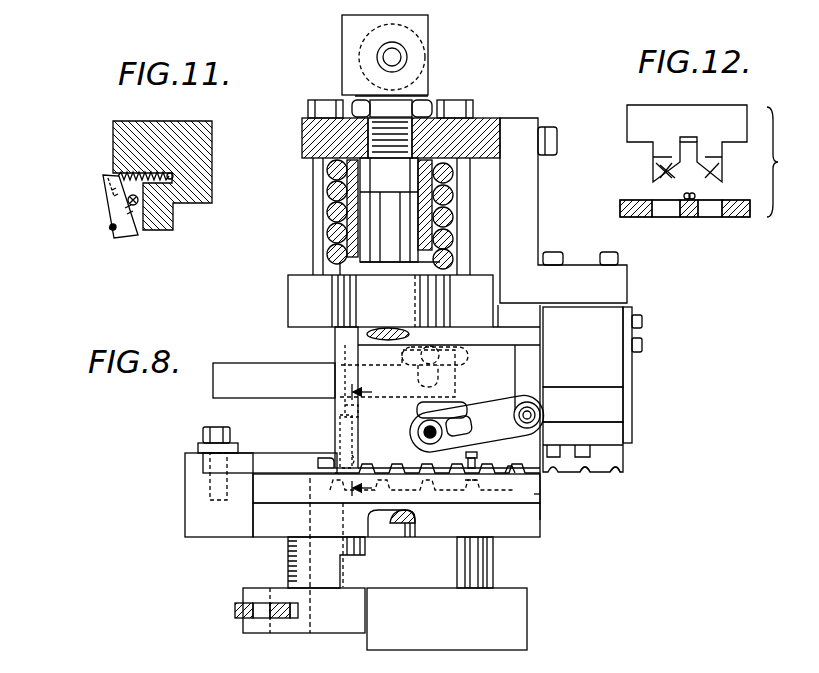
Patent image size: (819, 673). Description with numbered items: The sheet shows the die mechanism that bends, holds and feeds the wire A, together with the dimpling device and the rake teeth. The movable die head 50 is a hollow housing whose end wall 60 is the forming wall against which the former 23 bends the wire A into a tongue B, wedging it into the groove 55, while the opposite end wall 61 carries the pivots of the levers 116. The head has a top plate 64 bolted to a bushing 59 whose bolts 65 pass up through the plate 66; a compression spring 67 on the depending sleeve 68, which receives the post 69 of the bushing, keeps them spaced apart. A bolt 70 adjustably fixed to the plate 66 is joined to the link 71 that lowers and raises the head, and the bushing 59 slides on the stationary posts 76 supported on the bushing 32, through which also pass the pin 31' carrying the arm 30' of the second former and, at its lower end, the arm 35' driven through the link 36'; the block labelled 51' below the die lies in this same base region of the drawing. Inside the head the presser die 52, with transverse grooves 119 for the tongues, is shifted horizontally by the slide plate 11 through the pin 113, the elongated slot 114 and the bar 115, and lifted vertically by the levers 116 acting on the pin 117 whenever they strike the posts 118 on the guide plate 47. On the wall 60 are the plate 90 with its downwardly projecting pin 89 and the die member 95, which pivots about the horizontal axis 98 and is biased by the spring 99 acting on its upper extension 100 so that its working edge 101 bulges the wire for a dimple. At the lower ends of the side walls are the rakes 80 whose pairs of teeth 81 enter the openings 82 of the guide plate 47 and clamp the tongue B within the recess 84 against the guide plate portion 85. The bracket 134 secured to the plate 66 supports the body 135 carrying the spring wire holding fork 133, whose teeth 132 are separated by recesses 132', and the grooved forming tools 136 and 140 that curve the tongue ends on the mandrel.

In FIG. 8, the link 71 is at (428, 40).
In FIG. 8, the bolt 70 is at (410, 97).
In FIG. 8, the plate 66 is at (485, 127).
In FIG. 8, the bracket 134 is at (538, 190).
In FIG. 8, the bolts 65 is at (313, 182).
In FIG. 8, the depending sleeve 68 is at (350, 215).
In FIG. 8, the compression spring 67 is at (447, 238).
In FIG. 8, the post 69 is at (398, 242).
In FIG. 8, the bushing 59 is at (290, 298).
In FIG. 8, the stationary posts 76 is at (378, 327).
In FIG. 8, the die head 50 is at (322, 343).
In FIG. 8, the top plate 64 is at (508, 334).
In FIG. 8, the bar 115 is at (282, 369).
In FIG. 8, the end wall 61 is at (540, 375).
In FIG. 8, the pin 113 is at (426, 349).
In FIG. 8, the elongated slot 114 is at (469, 355).
In FIG. 8, the slide plate 11 is at (367, 438).
In FIG. 8, the levers 116 is at (490, 412).
In FIG. 8, the pin 117 is at (425, 428).
In FIG. 8, the body 135 is at (613, 371).
In FIG. 8, the spring wire holding fork 133 is at (620, 458).
In FIG. 8, the grooved forming tool 136 is at (552, 447).
In FIG. 8, the grooved tool 140 is at (587, 447).
In FIG. 8, the teeth 132 is at (604, 486).
In FIG. 8, the recesses 132' is at (641, 483).
In FIG. 8, the end wall 60 is at (338, 412).
In FIG. 11, the end wall 60 is at (118, 140).
In FIG. 8, the die member 95 is at (352, 432).
In FIG. 11, the die member 95 is at (110, 205).
In FIG. 8, the upper extension 100 is at (355, 416).
In FIG. 11, the upper extension 100 is at (107, 180).
In FIG. 8, the plate 90 is at (337, 432).
In FIG. 8, the working edge 101 is at (358, 457).
In FIG. 11, the working edge 101 is at (118, 238).
In FIG. 8, the groove 55 is at (333, 466).
In FIG. 8, the presser die 52 is at (422, 490).
In FIG. 8, the transverse grooves 119 is at (478, 478).
In FIG. 8, the posts 118 is at (478, 457).
In FIG. 8, the teeth 81 is at (522, 473).
In FIG. 12, the teeth 81 is at (667, 162).
In FIG. 8, the guide plate 47 is at (540, 494).
In FIG. 12, the guide plate 47 is at (632, 200).
In FIG. 8, the pin 89 is at (335, 476).
In FIG. 8, the slide block 51' is at (396, 520).
In FIG. 8, the former 23 is at (270, 457).
In FIG. 8, the arm 30' is at (198, 495).
In FIG. 8, the pin 31' is at (326, 555).
In FIG. 8, the arm 35' is at (304, 626).
In FIG. 8, the link 36' is at (250, 612).
In FIG. 8, the bushing 32 is at (493, 560).
In FIG. 11, the spring 99 is at (120, 173).
In FIG. 11, the horizontal axis 98 is at (135, 206).
In FIG. 11, the wire A is at (110, 229).
In FIG. 12, the rake 80 is at (627, 110).
In FIG. 12, the recess 84 is at (682, 140).
In FIG. 12, the openings 82 is at (668, 217).
In FIG. 12, the guide plate portion 85 is at (690, 217).
In FIG. 12, the tongue B is at (695, 197).